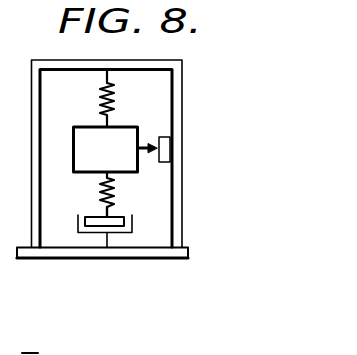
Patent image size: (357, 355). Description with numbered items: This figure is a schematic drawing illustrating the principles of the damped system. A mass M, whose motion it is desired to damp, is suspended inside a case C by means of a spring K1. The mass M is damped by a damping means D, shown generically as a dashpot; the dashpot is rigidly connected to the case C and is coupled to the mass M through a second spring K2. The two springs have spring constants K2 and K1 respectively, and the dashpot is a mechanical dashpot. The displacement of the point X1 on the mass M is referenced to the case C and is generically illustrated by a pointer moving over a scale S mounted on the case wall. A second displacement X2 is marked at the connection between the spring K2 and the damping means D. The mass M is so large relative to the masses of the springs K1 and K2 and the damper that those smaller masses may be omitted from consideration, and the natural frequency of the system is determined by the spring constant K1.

The case C is at (183, 106).
The spring K1 is at (98, 97).
The mass M is at (106, 149).
The displacement of the point X1 is at (141, 146).
The scale S is at (172, 148).
The spring K2 is at (112, 190).
The displacement of damper piston X2 is at (103, 213).
The damping means D is at (133, 225).